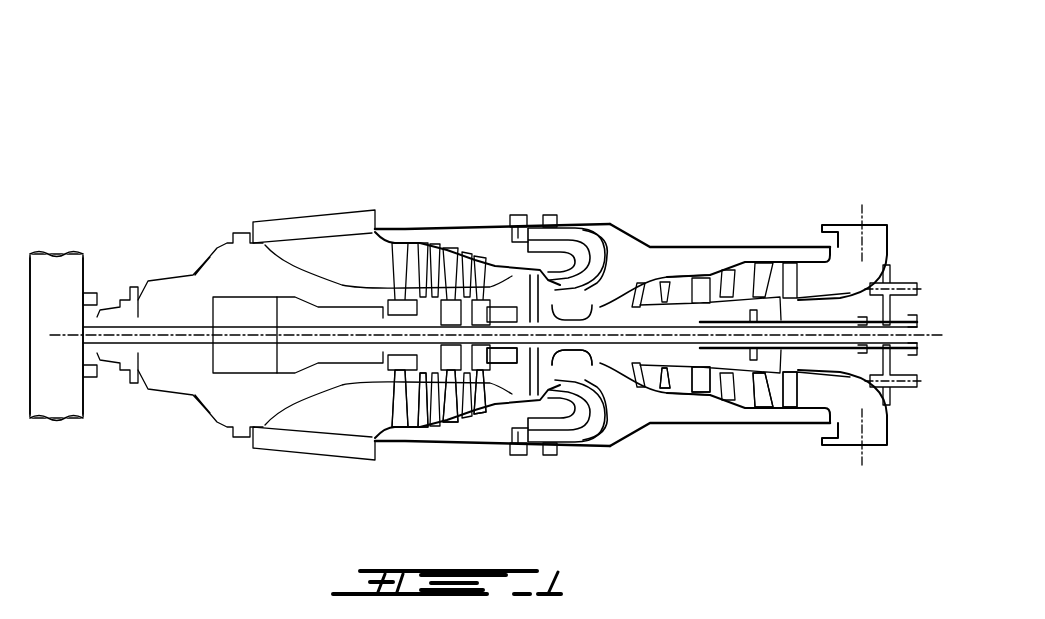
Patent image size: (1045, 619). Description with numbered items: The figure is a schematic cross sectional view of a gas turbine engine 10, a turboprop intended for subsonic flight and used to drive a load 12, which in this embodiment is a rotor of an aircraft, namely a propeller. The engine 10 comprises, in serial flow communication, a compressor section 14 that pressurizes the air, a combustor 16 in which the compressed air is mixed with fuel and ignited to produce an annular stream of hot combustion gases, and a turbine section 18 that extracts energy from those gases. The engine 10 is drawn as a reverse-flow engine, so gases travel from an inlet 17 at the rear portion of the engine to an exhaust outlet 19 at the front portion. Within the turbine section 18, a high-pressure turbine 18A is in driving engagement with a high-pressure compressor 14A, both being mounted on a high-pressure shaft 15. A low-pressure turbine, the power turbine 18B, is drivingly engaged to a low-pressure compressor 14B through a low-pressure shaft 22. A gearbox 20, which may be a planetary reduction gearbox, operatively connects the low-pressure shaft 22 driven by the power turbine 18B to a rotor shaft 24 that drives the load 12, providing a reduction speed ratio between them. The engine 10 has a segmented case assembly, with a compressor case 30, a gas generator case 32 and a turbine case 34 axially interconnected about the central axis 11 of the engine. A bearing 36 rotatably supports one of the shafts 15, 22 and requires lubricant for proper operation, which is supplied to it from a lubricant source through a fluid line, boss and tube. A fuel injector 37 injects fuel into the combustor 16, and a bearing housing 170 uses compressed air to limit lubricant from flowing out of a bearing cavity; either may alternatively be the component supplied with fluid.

The gas turbine engine 10 is at (828, 128).
The central axis 11 is at (112, 333).
The load 12 is at (55, 403).
The compressor section 14 is at (712, 262).
The high-pressure compressor 14A is at (648, 400).
The low-pressure compressor 14B is at (780, 390).
The high-pressure shaft 15 is at (615, 300).
The combustor 16 is at (570, 237).
The inlet 17 is at (873, 210).
The turbine section 18 is at (469, 240).
The high-pressure turbine 18A is at (470, 420).
The power turbine 18B is at (430, 415).
The exhaust outlet 19 is at (320, 205).
The gearbox 20 is at (233, 377).
The low-pressure shaft 22 is at (322, 327).
The rotor shaft 24 is at (163, 357).
The compressor case 30 is at (693, 230).
The gas generator case 32 is at (537, 225).
The turbine case 34 is at (423, 228).
The bearing 36 is at (625, 228).
The fuel injector 37 is at (523, 420).
The bearing housing 170 is at (590, 418).